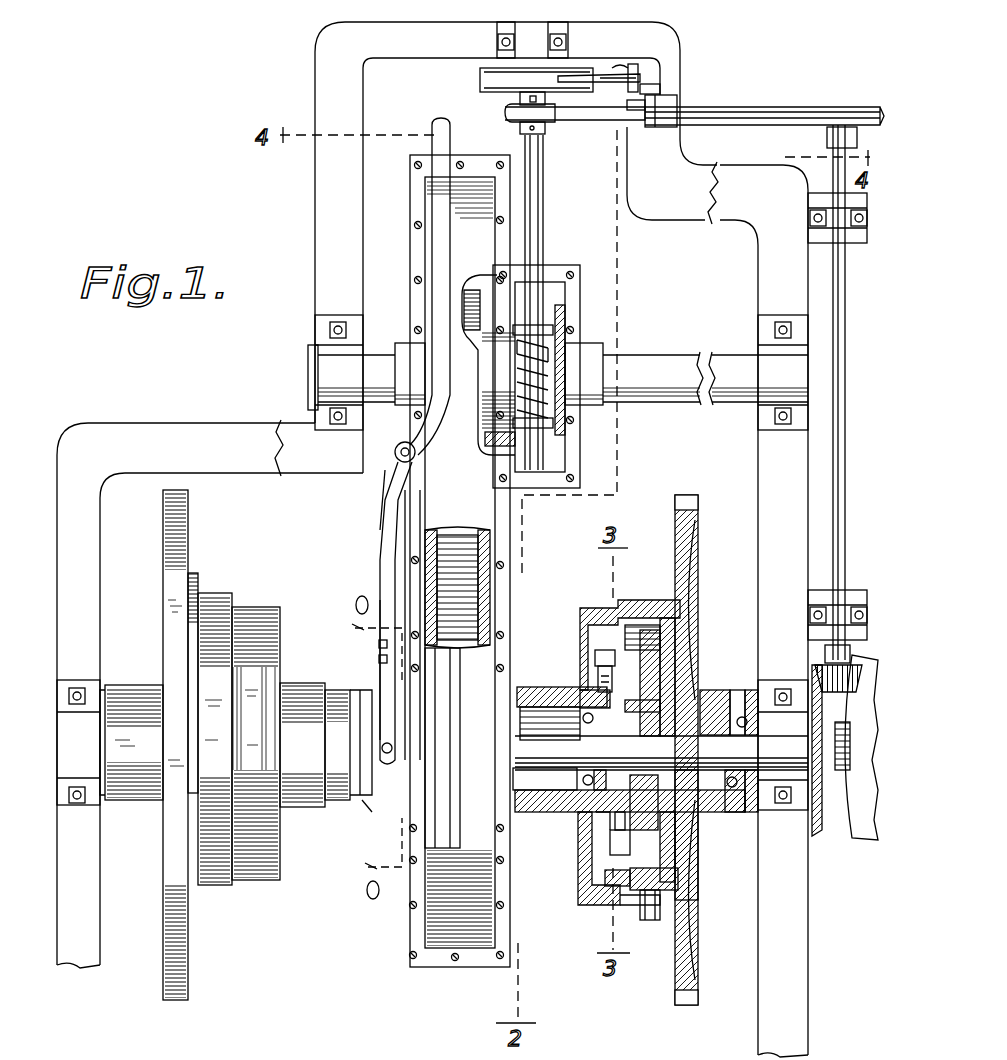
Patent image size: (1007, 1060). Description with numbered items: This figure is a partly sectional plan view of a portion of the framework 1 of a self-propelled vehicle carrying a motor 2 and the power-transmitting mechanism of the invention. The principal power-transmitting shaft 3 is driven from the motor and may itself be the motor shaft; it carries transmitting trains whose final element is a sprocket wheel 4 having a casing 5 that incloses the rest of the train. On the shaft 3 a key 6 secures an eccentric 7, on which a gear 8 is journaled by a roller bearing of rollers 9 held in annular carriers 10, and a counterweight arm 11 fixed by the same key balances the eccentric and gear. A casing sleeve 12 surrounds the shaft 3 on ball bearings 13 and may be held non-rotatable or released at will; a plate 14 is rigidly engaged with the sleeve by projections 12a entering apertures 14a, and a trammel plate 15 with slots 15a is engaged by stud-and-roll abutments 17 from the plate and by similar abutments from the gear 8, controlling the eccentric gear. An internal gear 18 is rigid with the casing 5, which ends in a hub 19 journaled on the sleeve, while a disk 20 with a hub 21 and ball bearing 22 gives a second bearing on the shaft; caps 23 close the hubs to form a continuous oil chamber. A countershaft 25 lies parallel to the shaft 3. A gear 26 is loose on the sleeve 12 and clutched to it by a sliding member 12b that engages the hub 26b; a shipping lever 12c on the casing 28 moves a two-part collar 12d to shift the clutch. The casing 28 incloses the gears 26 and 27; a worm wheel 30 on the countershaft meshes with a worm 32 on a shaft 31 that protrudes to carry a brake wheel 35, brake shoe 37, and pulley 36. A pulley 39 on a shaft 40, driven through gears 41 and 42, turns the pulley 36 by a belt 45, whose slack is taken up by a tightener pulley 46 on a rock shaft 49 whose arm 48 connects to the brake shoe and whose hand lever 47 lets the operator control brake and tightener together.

The framework 1 is at (172, 437).
The motor 2 is at (858, 845).
The principal power-transmitting shaft 3 is at (685, 746).
The sprocket wheel 4 is at (190, 530).
The casing 5 is at (256, 620).
The key 6 is at (700, 774).
The eccentric 7 is at (645, 812).
The gear 8 is at (665, 866).
The rollers 9 is at (685, 695).
The annular carriers 10 is at (688, 662).
The counterweight arm 11 is at (690, 645).
The casing sleeve 12 is at (345, 668).
The projections 12a is at (600, 690).
The sliding clutch member 12b is at (363, 816).
The shipping lever 12c is at (382, 513).
The two-part collar 12d is at (388, 768).
The ball bearings 13 is at (575, 781).
The plate 14 is at (606, 660).
The apertures 14a is at (590, 826).
The trammel plate 15 is at (615, 882).
The slots 15a is at (618, 856).
The stud-and-roll abutments 17 is at (625, 826).
The internal gear 18 is at (645, 892).
The hub 19 is at (303, 698).
The disk 20 is at (690, 612).
The hub 21 is at (137, 694).
The ball bearing 22 is at (748, 806).
The caps 23 is at (112, 700).
The countershaft 25 is at (640, 370).
The gear 26 is at (468, 607).
The hub 26b is at (405, 792).
The gear 27 is at (476, 552).
The casing 28 is at (485, 510).
The worm wheel 30 is at (576, 310).
The shaft 31 is at (542, 250).
The worm 32 is at (515, 362).
The brake wheel 35 is at (480, 72).
The pulley 36 is at (508, 112).
The brake shoe 37 is at (492, 84).
The pulley 39 is at (775, 105).
The shaft 40 is at (838, 305).
The gear 41 is at (842, 668).
The gear 42 is at (818, 836).
The belt 45 is at (612, 116).
The tightener pulley 46 is at (672, 115).
The hand lever 47 is at (580, 72).
The arm 48 is at (648, 72).
The rock shaft 49 is at (672, 105).